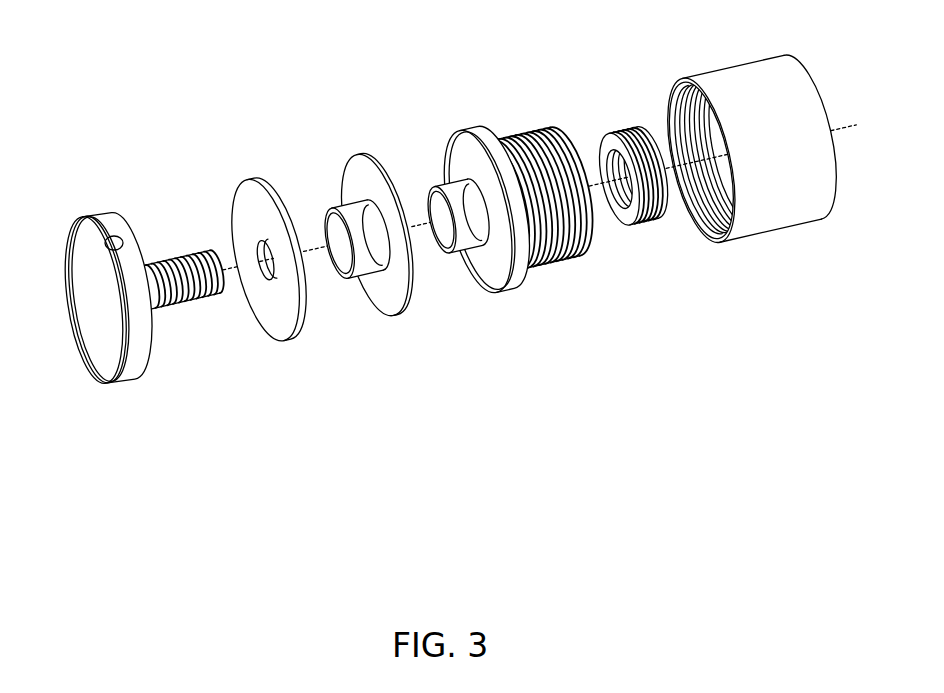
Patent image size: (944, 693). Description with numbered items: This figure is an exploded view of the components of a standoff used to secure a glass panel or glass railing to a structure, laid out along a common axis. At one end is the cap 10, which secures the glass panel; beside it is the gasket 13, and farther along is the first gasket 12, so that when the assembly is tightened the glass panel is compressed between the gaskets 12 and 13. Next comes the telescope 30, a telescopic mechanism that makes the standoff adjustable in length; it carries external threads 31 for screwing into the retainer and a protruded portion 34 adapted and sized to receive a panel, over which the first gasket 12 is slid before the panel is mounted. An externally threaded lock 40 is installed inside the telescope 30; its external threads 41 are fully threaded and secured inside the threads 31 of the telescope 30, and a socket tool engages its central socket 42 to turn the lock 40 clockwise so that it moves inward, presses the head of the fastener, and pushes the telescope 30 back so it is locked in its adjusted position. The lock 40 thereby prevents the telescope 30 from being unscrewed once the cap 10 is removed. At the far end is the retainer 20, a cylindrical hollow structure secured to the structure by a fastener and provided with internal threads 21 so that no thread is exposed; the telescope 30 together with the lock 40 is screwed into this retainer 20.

The cap 10 is at (103, 225).
The first gasket 12 is at (395, 297).
The gasket 13 is at (275, 320).
The retainer 20 is at (808, 205).
The internal threads 21 is at (708, 202).
The telescope 30 is at (477, 133).
The external threads 31 is at (533, 140).
The protruded portion 34 is at (448, 198).
The lock 40 is at (610, 142).
The external threads of the lock 41 is at (640, 138).
The central socket 42 is at (625, 178).